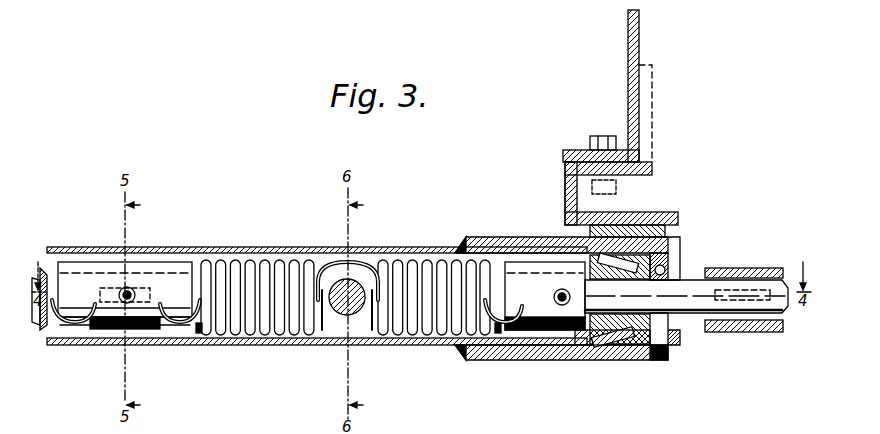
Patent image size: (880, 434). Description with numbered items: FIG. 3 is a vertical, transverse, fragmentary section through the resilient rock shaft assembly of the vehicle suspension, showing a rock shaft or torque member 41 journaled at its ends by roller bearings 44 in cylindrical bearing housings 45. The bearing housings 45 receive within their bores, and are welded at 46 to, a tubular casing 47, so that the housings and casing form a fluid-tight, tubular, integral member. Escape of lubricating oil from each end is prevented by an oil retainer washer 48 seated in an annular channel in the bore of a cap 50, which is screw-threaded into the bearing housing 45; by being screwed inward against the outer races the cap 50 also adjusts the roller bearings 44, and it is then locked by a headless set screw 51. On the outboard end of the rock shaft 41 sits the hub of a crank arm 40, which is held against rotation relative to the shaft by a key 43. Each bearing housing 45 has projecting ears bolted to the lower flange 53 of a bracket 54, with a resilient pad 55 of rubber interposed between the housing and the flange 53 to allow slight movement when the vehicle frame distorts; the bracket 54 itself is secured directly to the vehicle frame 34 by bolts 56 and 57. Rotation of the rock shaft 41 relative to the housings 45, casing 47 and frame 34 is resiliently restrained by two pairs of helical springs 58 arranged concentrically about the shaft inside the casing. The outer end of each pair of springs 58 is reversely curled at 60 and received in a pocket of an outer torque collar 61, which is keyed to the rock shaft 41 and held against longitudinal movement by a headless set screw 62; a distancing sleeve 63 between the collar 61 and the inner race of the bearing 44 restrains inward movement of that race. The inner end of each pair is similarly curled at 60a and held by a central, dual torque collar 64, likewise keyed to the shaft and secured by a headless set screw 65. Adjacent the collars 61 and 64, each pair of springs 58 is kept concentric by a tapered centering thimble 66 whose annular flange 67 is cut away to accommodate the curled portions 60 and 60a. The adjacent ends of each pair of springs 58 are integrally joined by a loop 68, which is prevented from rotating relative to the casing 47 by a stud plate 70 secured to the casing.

The vehicle frame 34 is at (640, 17).
The crank arm 40 is at (735, 268).
The rock shaft 41 is at (322, 288).
The key 43 is at (716, 290).
The roller bearings 44 is at (620, 265).
The bearing housings 45 is at (495, 237).
The weld 46 is at (458, 245).
The tubular casing 47 is at (100, 247).
The oil retainer washer 48 is at (670, 282).
The cap 50 is at (675, 342).
The headless set screws 51 is at (660, 362).
The lower flange 53 is at (680, 218).
The bracket 54 is at (652, 188).
The pad 55 is at (668, 233).
The bolt 56 is at (590, 145).
The bolt 57 is at (565, 182).
The helical springs 58 is at (66, 312).
The reversely curled outer end 60 is at (505, 319).
The reversely curled inner end 60a is at (78, 330).
The outer torque collar 61 is at (585, 347).
The headless set screw 62 is at (568, 290).
The distancing sleeve 63 is at (620, 331).
The central dual torque collar 64 is at (125, 286).
The headless set screw 65 is at (133, 289).
The centering thimble 66 is at (40, 330).
The annular flange 67 is at (50, 330).
The loop 68 is at (350, 264).
The stud plate 70 is at (347, 306).